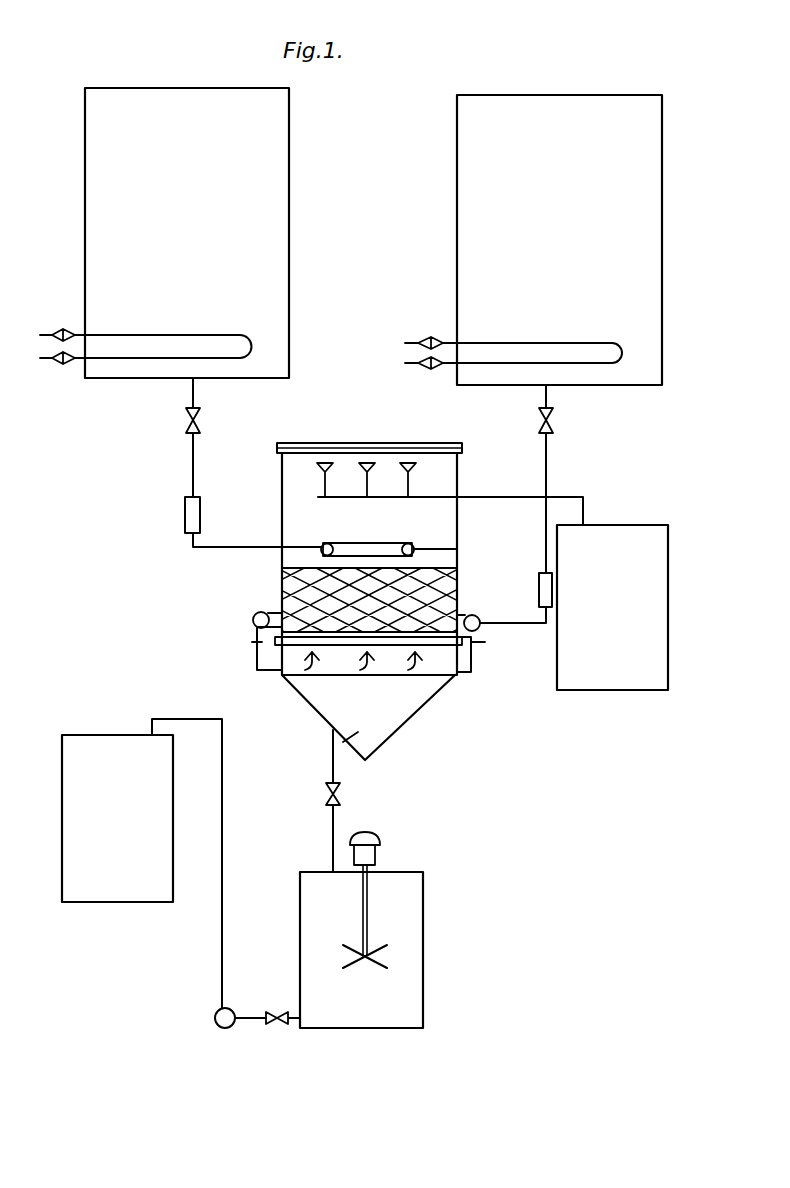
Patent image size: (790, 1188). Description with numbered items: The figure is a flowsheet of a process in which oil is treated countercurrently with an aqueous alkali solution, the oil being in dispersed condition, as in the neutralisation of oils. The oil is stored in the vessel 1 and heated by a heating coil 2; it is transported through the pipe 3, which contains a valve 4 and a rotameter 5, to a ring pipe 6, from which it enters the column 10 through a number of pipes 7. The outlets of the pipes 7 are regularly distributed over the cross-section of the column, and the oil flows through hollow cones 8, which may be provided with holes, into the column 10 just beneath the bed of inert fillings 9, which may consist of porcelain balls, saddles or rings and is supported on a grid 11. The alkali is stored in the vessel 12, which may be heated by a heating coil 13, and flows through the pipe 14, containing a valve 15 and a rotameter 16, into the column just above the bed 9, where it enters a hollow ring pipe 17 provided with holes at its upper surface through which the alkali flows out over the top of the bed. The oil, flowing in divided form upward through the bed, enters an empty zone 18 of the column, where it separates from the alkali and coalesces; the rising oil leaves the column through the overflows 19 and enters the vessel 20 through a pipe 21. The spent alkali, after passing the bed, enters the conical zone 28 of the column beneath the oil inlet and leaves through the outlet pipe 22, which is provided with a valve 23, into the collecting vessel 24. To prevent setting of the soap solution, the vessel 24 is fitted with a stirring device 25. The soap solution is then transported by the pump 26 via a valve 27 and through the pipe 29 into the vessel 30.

The vessel 1 is at (464, 266).
The heating coil 2 is at (534, 343).
The pipe 3 is at (546, 470).
The valve 4 is at (551, 420).
The rotameter 5 is at (539, 599).
The ring pipe 6 is at (462, 614).
The pipes 7 is at (257, 650).
The hollow cones 8 is at (378, 657).
The bed of inert fillings 9 is at (290, 578).
The column 10 is at (282, 513).
The grid 11 is at (476, 645).
The vessel 12 is at (285, 176).
The heating coil 13 is at (148, 335).
The pipe 14 is at (193, 465).
The valve 15 is at (186, 421).
The rotameter 16 is at (185, 510).
The hollow ring pipe 17 is at (395, 543).
The empty zone 18 is at (373, 495).
The overflows 19 is at (317, 466).
The vessel 20 is at (567, 665).
The pipe 21 is at (486, 497).
The outlet pipe 22 is at (333, 750).
The valve 23 is at (340, 797).
The collecting vessel 24 is at (424, 940).
The stirring device 25 is at (362, 925).
The pump 26 is at (215, 1022).
The valve 27 is at (282, 1000).
The conical zone 28 is at (305, 698).
The pipe 29 is at (222, 815).
The vessel 30 is at (112, 735).